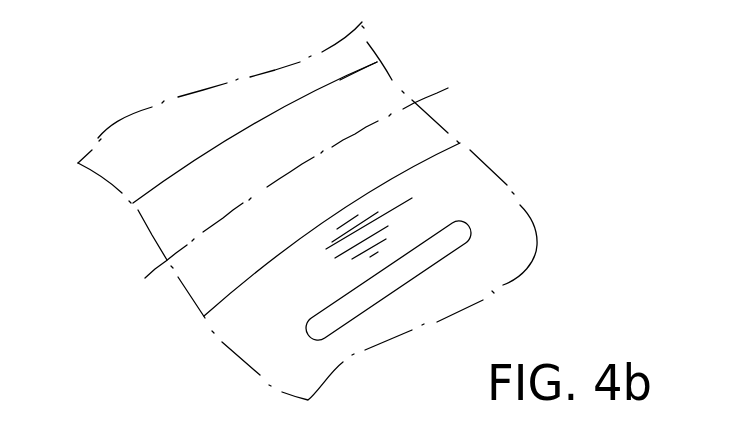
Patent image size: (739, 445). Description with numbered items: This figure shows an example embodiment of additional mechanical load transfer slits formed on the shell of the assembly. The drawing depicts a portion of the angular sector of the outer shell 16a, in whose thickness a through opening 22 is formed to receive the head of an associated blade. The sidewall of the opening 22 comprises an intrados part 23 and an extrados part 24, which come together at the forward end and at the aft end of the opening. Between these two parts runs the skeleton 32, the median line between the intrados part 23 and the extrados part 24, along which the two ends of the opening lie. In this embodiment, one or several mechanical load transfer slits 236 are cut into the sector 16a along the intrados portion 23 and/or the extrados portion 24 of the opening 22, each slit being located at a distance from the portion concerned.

The angular sector of the outer shell 16a is at (205, 121).
The opening 22 is at (360, 73).
The extrados part 24 is at (290, 103).
The skeleton 32 is at (150, 272).
The intrados part 23 is at (313, 229).
The mechanical load transfer slit 236 is at (365, 292).